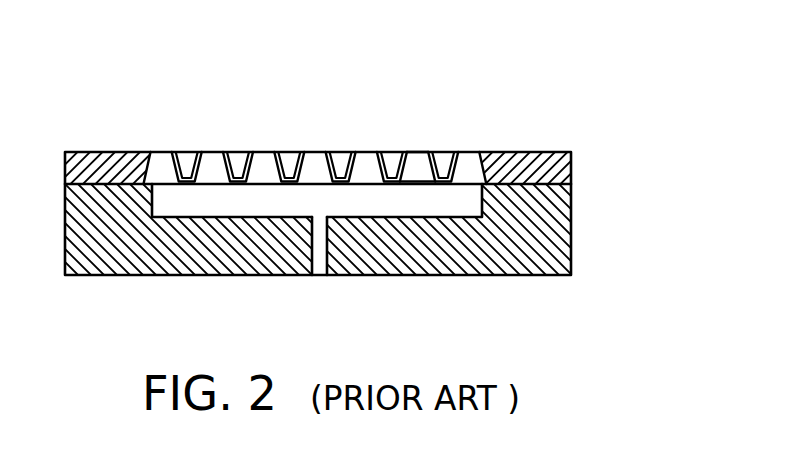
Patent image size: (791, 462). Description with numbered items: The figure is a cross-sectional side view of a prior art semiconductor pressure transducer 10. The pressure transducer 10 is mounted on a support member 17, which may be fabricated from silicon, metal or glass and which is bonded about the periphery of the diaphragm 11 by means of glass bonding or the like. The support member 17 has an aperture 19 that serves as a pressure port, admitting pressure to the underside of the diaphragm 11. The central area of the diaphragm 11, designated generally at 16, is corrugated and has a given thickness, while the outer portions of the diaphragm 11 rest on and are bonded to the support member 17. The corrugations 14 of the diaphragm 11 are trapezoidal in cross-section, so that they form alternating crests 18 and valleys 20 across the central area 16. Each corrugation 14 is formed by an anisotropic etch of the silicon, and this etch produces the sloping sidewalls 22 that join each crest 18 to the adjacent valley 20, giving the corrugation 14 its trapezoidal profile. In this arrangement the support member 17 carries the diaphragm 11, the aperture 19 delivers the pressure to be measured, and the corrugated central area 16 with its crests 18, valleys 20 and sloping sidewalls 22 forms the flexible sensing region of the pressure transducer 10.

The pressure transducer 10 is at (331, 34).
The diaphragm 11 is at (218, 151).
The corrugations 14 is at (317, 151).
The central area of diaphragm 16 is at (240, 194).
The support member 17 is at (572, 198).
The crests 18 is at (415, 151).
The aperture 19 is at (312, 257).
The valleys 20 is at (450, 167).
The sloping sidewalls 22 is at (285, 151).